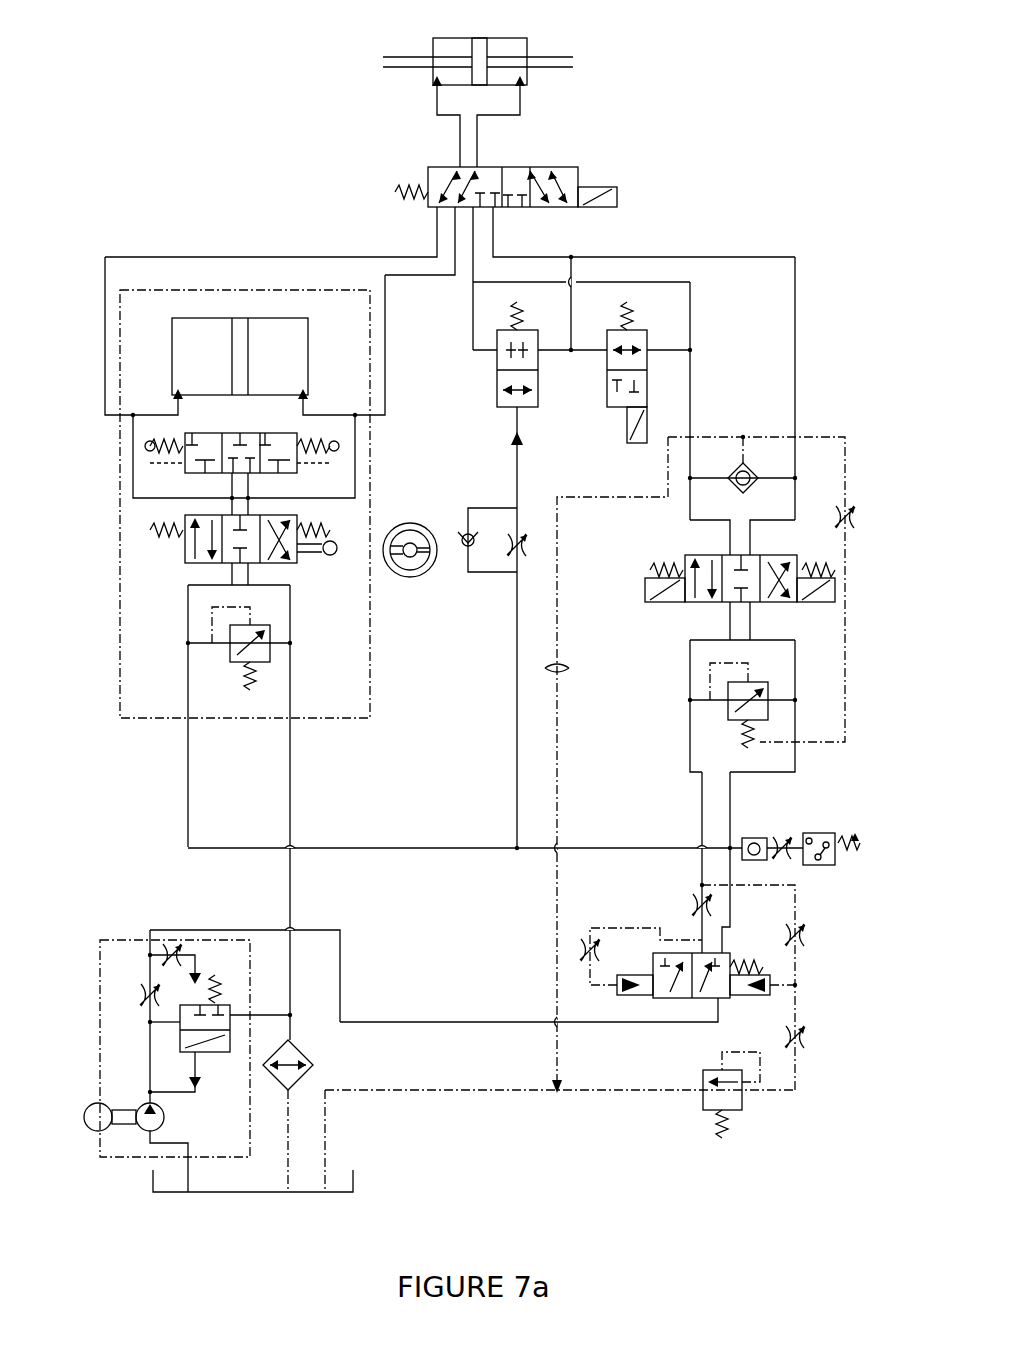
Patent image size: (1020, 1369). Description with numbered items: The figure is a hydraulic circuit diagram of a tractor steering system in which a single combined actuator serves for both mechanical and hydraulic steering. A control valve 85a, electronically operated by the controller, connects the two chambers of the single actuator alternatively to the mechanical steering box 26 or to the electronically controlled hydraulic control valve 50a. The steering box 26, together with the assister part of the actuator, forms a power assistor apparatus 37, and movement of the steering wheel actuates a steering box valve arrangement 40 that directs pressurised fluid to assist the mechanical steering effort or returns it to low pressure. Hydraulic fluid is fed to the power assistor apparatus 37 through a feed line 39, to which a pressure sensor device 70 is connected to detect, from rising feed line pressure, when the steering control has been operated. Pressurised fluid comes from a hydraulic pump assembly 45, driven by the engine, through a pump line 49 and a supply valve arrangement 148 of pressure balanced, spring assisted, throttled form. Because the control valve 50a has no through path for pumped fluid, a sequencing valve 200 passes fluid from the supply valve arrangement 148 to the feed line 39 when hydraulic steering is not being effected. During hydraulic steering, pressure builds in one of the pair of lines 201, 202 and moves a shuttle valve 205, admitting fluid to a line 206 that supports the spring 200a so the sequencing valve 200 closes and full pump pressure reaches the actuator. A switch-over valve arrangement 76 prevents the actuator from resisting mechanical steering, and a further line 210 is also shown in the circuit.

The control valve 85a is at (560, 210).
The steering box 26 is at (375, 470).
The steering box valve arrangement 40 is at (266, 665).
The power assistor apparatus 37 is at (373, 630).
The switch-over valve arrangement 76 is at (578, 396).
The hydraulic line 210 is at (512, 728).
The line 201 is at (692, 385).
The line 202 is at (780, 260).
The shuttle valve 205 is at (750, 465).
The line 206 is at (830, 436).
The electronically controlled hydraulic control valve 50a is at (780, 608).
The sequencing valve 200 is at (725, 702).
The spring 200a is at (690, 765).
The feed line 39 is at (412, 850).
The pressure sensor device 70 is at (818, 834).
The supply valve arrangement 148 is at (643, 922).
The pump line 49 is at (428, 1022).
The hydraulic pump assembly 45 is at (130, 930).